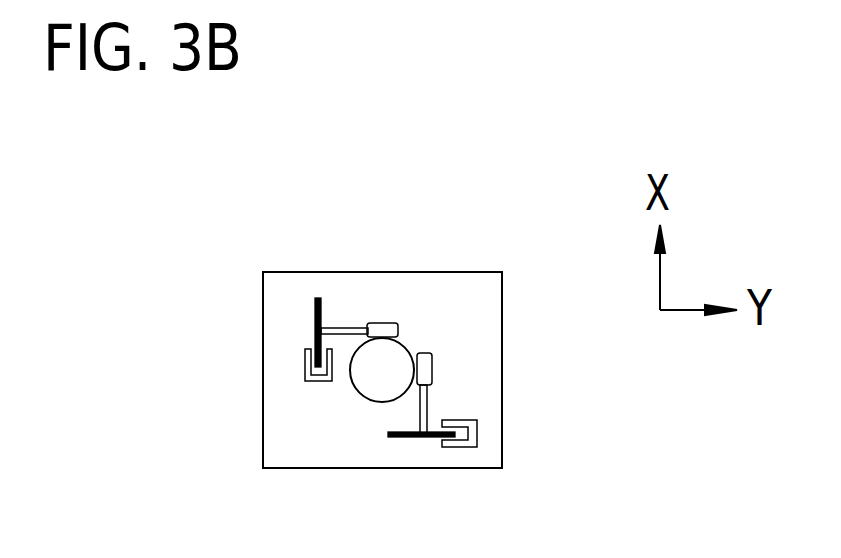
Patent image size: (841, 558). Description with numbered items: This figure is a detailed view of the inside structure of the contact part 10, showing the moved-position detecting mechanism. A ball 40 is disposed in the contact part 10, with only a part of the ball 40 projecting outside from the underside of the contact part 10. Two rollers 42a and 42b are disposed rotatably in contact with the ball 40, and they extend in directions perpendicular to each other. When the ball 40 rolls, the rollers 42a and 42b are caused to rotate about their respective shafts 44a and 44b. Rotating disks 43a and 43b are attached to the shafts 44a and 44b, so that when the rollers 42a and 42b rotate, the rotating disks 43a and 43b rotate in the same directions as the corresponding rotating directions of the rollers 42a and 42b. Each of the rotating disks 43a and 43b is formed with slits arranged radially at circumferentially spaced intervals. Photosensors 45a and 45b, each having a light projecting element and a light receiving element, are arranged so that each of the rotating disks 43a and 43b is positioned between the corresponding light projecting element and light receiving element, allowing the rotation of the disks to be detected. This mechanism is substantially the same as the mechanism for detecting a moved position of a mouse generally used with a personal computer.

The contact part 10 is at (263, 362).
The ball 40 is at (372, 380).
The roller 42a is at (385, 325).
The roller 42b is at (432, 355).
The rotating disk 43a is at (318, 298).
The rotating disk 43b is at (403, 438).
The shaft 44a is at (350, 328).
The shaft 44b is at (427, 400).
The photosensor 45a is at (307, 350).
The photosensor 45b is at (477, 423).